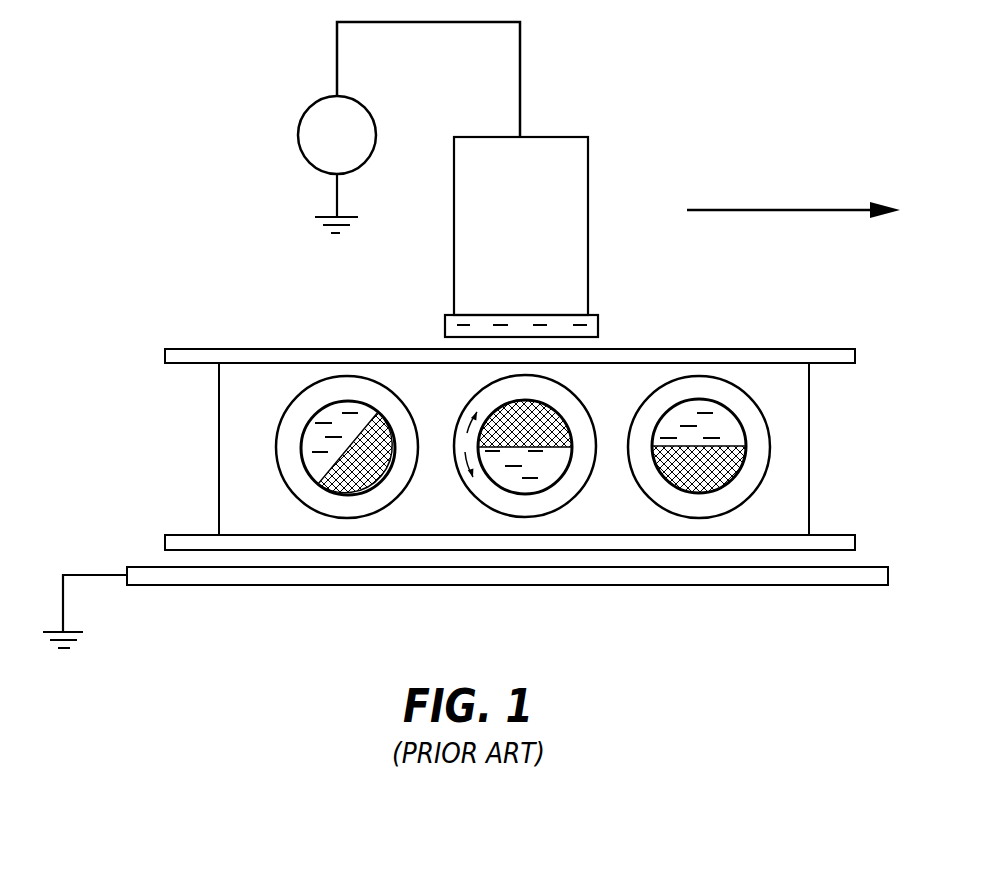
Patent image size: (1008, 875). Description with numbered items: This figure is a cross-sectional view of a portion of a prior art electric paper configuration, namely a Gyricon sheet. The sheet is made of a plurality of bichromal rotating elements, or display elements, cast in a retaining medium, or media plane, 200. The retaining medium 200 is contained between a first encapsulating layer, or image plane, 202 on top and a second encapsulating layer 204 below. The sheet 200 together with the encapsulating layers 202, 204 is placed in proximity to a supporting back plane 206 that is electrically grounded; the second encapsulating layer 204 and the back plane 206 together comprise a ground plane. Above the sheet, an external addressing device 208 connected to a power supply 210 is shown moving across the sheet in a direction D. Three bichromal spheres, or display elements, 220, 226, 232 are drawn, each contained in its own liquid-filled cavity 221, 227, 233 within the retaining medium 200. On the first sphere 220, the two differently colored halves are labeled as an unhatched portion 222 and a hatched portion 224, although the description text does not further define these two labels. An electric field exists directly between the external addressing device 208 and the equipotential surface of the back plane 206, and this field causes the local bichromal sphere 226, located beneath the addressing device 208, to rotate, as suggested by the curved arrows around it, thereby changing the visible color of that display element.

The retaining medium 200 is at (222, 462).
The first encapsulating layer 202 is at (165, 353).
The second encapsulating layer 204 is at (167, 540).
The supporting back plane 206 is at (177, 582).
The external addressing device 208 is at (588, 152).
The power supply 210 is at (307, 122).
The bichromal sphere 220 is at (299, 471).
The liquid-filled cavity 221 is at (342, 392).
The liquid portion of first wafer 222 is at (323, 463).
The solid (hatched) portion of first wafer 224 is at (338, 490).
The bichromal sphere 226 is at (579, 415).
The liquid-filled cavity 227 is at (583, 455).
The bichromal sphere 232 is at (754, 414).
The liquid-filled cavity 233 is at (755, 425).
The direction D is at (770, 208).